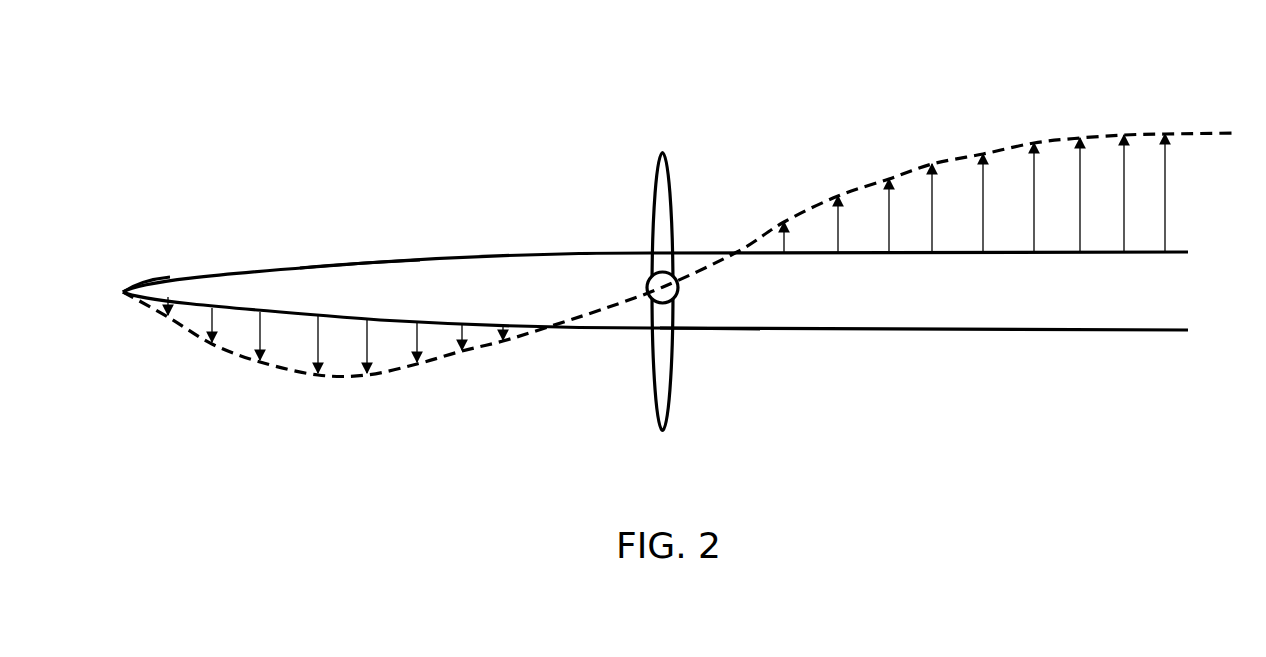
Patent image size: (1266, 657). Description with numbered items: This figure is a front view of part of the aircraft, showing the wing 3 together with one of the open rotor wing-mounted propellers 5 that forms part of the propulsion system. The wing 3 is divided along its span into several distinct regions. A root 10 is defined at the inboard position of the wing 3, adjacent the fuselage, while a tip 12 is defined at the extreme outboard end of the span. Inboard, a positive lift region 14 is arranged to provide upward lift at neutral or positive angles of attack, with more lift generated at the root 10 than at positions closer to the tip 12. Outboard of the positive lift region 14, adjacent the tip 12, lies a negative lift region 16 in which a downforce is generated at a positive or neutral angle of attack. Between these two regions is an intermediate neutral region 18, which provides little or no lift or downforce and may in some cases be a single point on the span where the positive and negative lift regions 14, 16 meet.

The wing 3 is at (751, 148).
The propeller 5 is at (648, 247).
The root 10 is at (1180, 333).
The tip 12 is at (122, 291).
The positive lift region 14 is at (973, 257).
The negative lift region 16 is at (367, 258).
The neutral region 18 is at (690, 333).